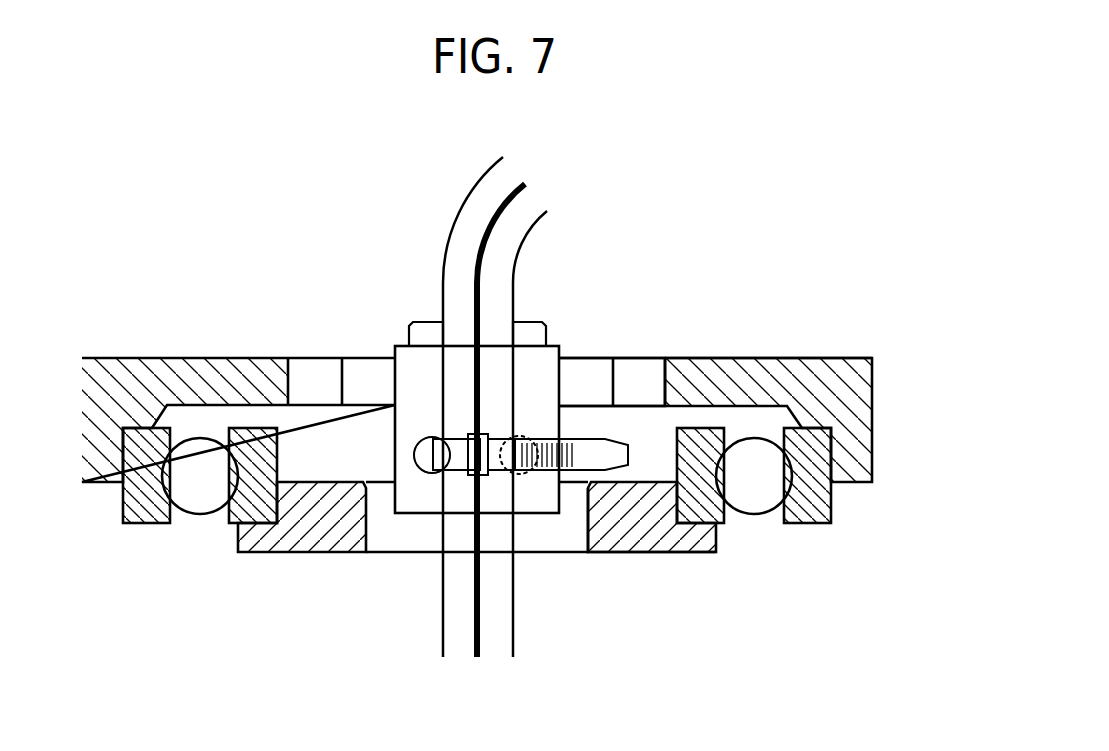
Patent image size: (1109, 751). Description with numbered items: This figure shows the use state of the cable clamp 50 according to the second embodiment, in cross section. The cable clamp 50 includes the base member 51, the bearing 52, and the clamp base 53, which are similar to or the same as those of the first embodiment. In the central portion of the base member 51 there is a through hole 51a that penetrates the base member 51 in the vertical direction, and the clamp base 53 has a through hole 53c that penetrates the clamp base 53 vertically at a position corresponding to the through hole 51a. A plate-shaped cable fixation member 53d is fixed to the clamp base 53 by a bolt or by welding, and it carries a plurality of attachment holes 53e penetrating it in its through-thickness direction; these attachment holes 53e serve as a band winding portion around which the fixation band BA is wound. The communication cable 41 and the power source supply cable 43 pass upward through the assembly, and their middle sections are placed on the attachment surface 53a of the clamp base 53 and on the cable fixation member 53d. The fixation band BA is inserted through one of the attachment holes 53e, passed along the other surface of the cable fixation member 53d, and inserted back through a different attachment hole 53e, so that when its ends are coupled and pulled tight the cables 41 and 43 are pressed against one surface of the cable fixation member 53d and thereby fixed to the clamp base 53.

The cable clamp 50 is at (148, 328).
The communication cable 41 is at (457, 220).
The power source supply cable 43 is at (522, 247).
The base member 51 is at (716, 536).
The through hole 51a is at (573, 533).
The bearing 52 is at (832, 508).
The clamp base 53 is at (872, 413).
The attachment surface 53a is at (768, 357).
The through hole 53c is at (589, 380).
The cable fixation member 53d is at (413, 383).
The attachment holes 53e is at (428, 473).
The fixation band BA is at (610, 438).